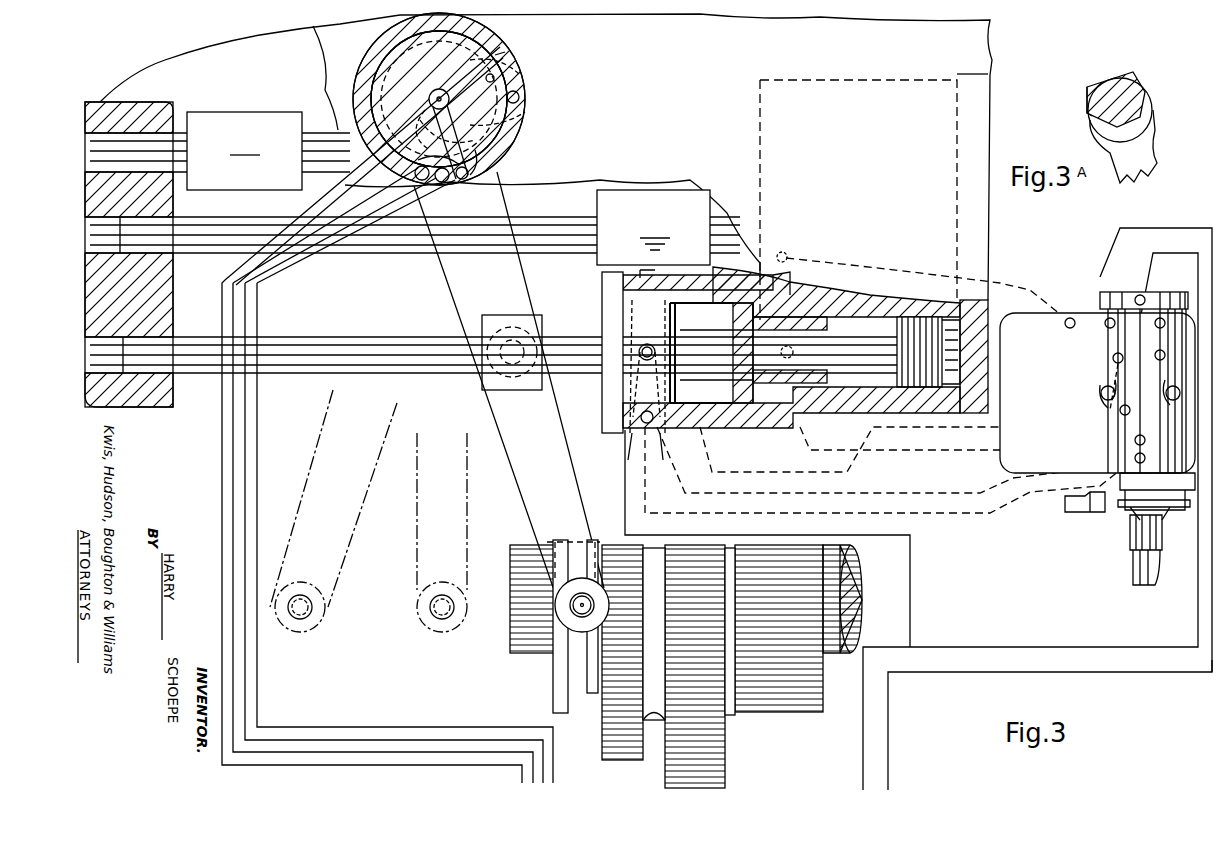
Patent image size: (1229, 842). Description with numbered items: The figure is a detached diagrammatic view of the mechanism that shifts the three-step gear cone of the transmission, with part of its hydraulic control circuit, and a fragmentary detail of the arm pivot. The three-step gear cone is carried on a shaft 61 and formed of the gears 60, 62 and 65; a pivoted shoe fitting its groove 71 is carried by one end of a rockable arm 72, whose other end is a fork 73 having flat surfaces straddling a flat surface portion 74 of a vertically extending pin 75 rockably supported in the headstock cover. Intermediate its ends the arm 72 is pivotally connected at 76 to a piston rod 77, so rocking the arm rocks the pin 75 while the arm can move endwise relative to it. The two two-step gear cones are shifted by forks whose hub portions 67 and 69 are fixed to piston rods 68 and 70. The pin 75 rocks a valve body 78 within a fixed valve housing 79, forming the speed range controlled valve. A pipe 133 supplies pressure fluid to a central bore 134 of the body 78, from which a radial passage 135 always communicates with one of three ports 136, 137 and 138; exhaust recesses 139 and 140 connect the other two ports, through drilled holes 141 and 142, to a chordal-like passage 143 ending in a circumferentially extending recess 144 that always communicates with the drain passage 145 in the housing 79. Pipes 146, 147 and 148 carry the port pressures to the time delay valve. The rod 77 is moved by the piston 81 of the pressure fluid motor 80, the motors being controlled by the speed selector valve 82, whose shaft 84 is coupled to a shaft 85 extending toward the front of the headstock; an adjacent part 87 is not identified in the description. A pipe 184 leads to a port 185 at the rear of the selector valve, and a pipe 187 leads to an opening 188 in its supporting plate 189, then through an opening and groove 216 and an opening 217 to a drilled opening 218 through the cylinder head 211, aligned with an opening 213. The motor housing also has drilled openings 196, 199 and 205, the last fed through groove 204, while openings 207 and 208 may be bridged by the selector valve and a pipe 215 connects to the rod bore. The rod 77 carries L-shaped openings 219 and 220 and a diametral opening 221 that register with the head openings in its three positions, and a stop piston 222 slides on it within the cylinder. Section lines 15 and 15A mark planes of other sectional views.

In FIG. 3, the gear 60 is at (720, 765).
In FIG. 3, the shaft 61 is at (858, 590).
In FIG. 3, the gear 62 is at (760, 715).
In FIG. 3, the gear 65 is at (610, 750).
In FIG. 3, the hub portion 67 is at (660, 228).
In FIG. 3, the piston rod 68 is at (355, 252).
In FIG. 3, the hub portion 69 is at (240, 120).
In FIG. 3, the piston rod 70 is at (320, 135).
In FIG. 3, the groove 71 is at (582, 705).
In FIG. 3, the rockable arm 72 is at (437, 402).
In FIG. 3A, the rockable arm 72 is at (1157, 163).
In FIG. 3A, the fork 73 is at (1150, 97).
In FIG. 3A, the flat surface portion 74 is at (1085, 108).
In FIG. 3, the vertically extending pin 75 is at (458, 78).
In FIG. 3A, the vertically extending pin 75 is at (1110, 75).
In FIG. 3, the pivotal connection 76 is at (496, 318).
In FIG. 3, the piston rod 77 is at (326, 342).
In FIG. 3, the valve body 78 is at (455, 45).
In FIG. 3, the valve housing 79 is at (498, 80).
In FIG. 3, the pressure fluid motor 80 is at (820, 408).
In FIG. 3, the piston 81 is at (898, 345).
In FIG. 3, the speed selector valve 82 is at (1158, 440).
In FIG. 3, the shaft 84 is at (1160, 510).
In FIG. 3, the shaft 85 is at (1160, 565).
In FIG. 3, the block 87 is at (1125, 510).
In FIG. 3, the pipe 133 is at (312, 206).
In FIG. 3, the bore 134 is at (505, 52).
In FIG. 3, the radial passage 135 is at (480, 140).
In FIG. 3, the port 136 is at (380, 190).
In FIG. 3, the port 137 is at (442, 183).
In FIG. 3, the port 138 is at (466, 182).
In FIG. 3, the exhaust recess 139 is at (412, 174).
In FIG. 3, the exhaust recess 140 is at (490, 170).
In FIG. 3, the drilled hole 141 is at (380, 165).
In FIG. 3, the drilled hole 142 is at (528, 112).
In FIG. 3, the chordal-like passage 143 is at (555, 78).
In FIG. 3, the circumferentially extending recess 144 is at (548, 47).
In FIG. 3, the exhaust or drain passage 145 is at (522, 98).
In FIG. 3, the pipe 146 is at (248, 298).
In FIG. 3, the pipe 147 is at (248, 313).
In FIG. 3, the pipe 148 is at (248, 328).
In FIG. 3, the pipe 184 is at (1198, 258).
In FIG. 3, the port 185 is at (1140, 298).
In FIG. 3, the pipe 187 is at (1118, 672).
In FIG. 3, the drilled opening 188 is at (1068, 328).
In FIG. 3, the supporting plate 189 is at (1178, 352).
In FIG. 3, the drilled opening 196 is at (986, 300).
In FIG. 3, the drilled opening 199 is at (676, 312).
In FIG. 3, the drilled opening and groove 204 is at (865, 450).
In FIG. 3, the drilled opening 205 is at (785, 310).
In FIG. 3, the drilled opening and groove 207 is at (858, 490).
In FIG. 3, the drilled opening and groove 208 is at (960, 510).
In FIG. 3, the cylinder head 211 is at (640, 383).
In FIG. 3, the drilled opening 213 is at (640, 400).
In FIG. 3, the pipe 215 is at (912, 578).
In FIG. 3, the opening and groove 216 is at (712, 262).
In FIG. 3, the opening 217 is at (605, 300).
In FIG. 3, the drilled opening 218 is at (648, 312).
In FIG. 3, the L-shaped opening 219 is at (640, 347).
In FIG. 3, the L-shaped opening 220 is at (795, 355).
In FIG. 3, the diametral opening 221 is at (727, 372).
In FIG. 3, the stop piston 222 is at (748, 420).
In FIG. 3, the section line 15 is at (1186, 308).
In FIG. 3, the section line 15A is at (634, 470).